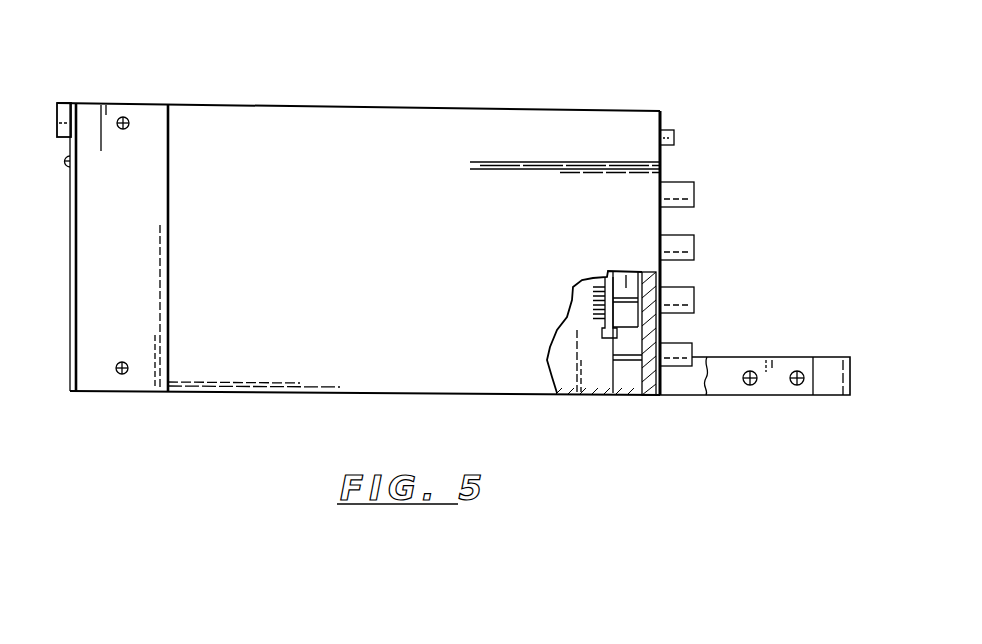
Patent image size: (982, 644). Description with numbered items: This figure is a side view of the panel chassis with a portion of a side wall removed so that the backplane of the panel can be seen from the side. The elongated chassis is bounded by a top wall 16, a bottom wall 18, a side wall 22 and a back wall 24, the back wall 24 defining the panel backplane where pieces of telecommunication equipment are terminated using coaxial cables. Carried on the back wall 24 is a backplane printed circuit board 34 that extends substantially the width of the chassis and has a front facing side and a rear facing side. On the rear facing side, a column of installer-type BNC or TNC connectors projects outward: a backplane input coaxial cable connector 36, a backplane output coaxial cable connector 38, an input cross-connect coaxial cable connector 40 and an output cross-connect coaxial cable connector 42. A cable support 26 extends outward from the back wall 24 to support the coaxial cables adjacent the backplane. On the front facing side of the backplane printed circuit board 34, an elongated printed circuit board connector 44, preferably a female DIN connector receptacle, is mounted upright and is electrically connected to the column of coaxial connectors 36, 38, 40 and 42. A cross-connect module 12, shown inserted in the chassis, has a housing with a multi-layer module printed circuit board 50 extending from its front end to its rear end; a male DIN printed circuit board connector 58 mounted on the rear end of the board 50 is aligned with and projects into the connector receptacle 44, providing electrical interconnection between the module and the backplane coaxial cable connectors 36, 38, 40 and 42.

The cross-connect module 12 is at (70, 318).
The top wall 16 is at (357, 107).
The bottom wall 18 is at (312, 393).
The side wall 22 is at (385, 259).
The back wall 24 is at (662, 165).
The cable support 26 is at (725, 380).
The backplane printed circuit board 34 is at (645, 375).
The backplane input coaxial cable connector 36 is at (674, 190).
The backplane output coaxial cable connector 38 is at (674, 243).
The input cross-connect coaxial cable connector 40 is at (674, 293).
The output cross-connect coaxial cable connector 42 is at (674, 345).
The printed circuit board connector 44 is at (626, 283).
The module printed circuit board 50 is at (565, 355).
The printed circuit board connector 58 is at (612, 270).